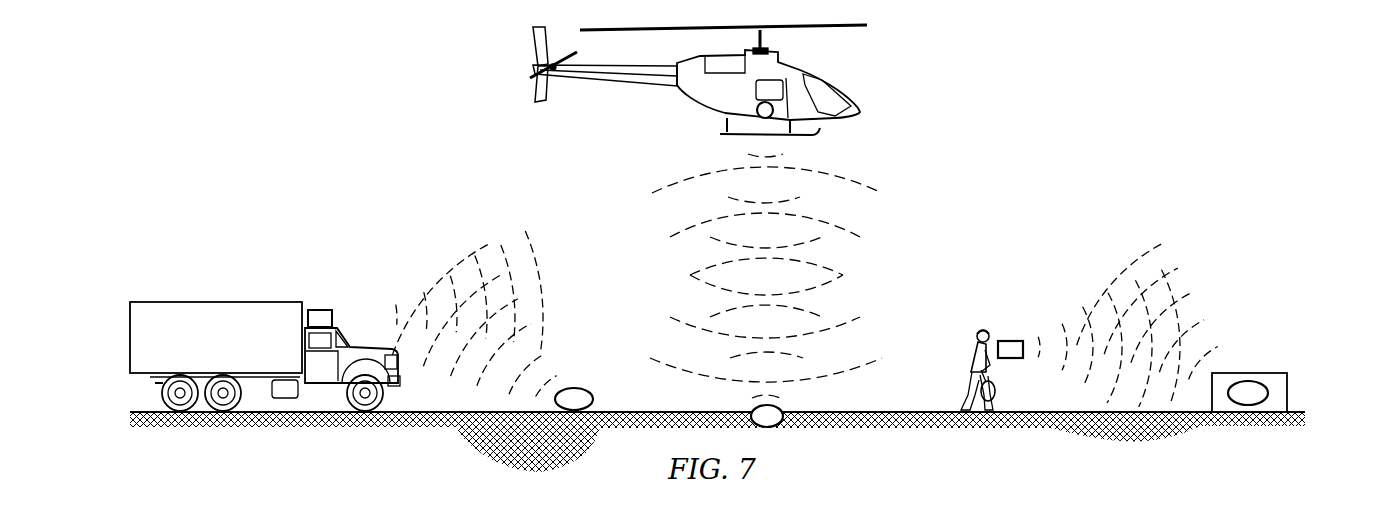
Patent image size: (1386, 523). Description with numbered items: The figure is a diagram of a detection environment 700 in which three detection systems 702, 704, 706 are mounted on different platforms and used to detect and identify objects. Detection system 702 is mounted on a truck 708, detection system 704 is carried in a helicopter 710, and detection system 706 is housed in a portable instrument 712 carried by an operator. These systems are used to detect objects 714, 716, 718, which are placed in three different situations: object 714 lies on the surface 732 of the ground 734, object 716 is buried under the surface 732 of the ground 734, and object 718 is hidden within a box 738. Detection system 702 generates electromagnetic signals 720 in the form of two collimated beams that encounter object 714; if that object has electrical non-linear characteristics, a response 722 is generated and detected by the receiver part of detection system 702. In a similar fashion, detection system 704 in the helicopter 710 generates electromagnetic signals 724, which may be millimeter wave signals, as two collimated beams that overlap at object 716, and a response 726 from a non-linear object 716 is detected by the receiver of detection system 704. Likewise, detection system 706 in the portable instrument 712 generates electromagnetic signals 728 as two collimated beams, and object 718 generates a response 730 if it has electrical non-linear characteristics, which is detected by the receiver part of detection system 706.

The detection environment 700 is at (1034, 127).
The detection system 702 is at (328, 310).
The detection system 704 is at (757, 106).
The detection system 706 is at (1010, 340).
The truck 708 is at (215, 302).
The helicopter 710 is at (843, 93).
The portable instrument 712 is at (991, 383).
The object 714 is at (577, 388).
The object 716 is at (781, 428).
The object 718 is at (1263, 373).
The electromagnetic signals 720 is at (503, 250).
The response 722 is at (467, 262).
The electromagnetic signals 724 is at (853, 321).
The response 726 is at (682, 228).
The electromagnetic signals 728 is at (1143, 283).
The response 730 is at (1107, 290).
The surface 732 is at (447, 406).
The ground 734 is at (554, 449).
The box 738 is at (1250, 373).